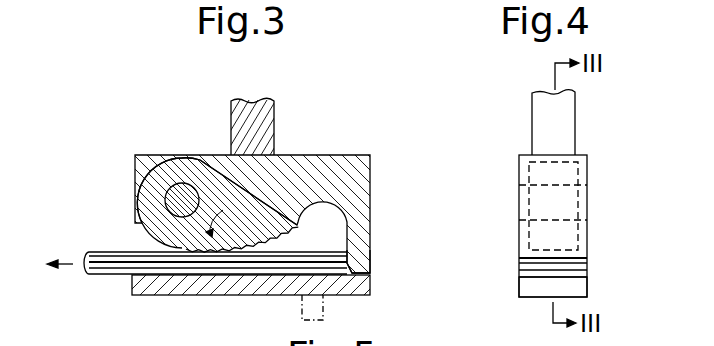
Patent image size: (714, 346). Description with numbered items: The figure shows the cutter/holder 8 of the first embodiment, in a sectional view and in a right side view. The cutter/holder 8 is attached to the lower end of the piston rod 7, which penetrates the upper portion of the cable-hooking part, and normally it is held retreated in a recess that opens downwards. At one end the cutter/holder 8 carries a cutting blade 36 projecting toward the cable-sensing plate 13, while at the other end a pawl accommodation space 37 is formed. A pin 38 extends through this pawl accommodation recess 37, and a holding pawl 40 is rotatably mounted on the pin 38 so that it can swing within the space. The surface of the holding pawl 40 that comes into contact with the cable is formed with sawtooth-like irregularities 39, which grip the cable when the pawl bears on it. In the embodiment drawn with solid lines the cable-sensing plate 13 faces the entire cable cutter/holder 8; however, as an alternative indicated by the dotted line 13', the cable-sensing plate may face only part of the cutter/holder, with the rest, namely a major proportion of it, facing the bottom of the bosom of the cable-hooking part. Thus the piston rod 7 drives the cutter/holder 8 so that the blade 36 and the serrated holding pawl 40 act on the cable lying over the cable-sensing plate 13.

In FIG. 3, the piston rod 7 is at (250, 102).
In FIG. 4, the piston rod 7 is at (575, 105).
In FIG. 3, the cutter/holder 8 is at (312, 157).
In FIG. 3, the cable-sensing plate 13 is at (270, 288).
In FIG. 4, the cable-sensing plate 13 is at (582, 289).
In FIG. 3, the dotted line 13' is at (344, 311).
In FIG. 3, the cutting blade 36 is at (360, 268).
In FIG. 4, the cutting blade 36 is at (580, 270).
In FIG. 4, the pawl accommodation space 37 is at (583, 177).
In FIG. 3, the pin 38 is at (174, 196).
In FIG. 4, the pin 38 is at (528, 200).
In FIG. 3, the sawtooth-like irregularities 39 is at (249, 250).
In FIG. 3, the holding pawl 40 is at (181, 172).
In FIG. 4, the holding pawl 40 is at (560, 230).